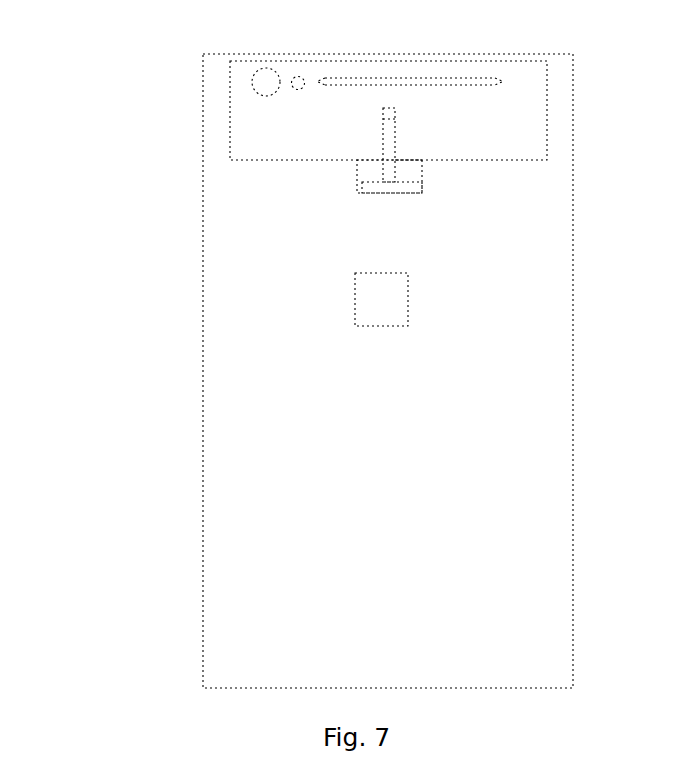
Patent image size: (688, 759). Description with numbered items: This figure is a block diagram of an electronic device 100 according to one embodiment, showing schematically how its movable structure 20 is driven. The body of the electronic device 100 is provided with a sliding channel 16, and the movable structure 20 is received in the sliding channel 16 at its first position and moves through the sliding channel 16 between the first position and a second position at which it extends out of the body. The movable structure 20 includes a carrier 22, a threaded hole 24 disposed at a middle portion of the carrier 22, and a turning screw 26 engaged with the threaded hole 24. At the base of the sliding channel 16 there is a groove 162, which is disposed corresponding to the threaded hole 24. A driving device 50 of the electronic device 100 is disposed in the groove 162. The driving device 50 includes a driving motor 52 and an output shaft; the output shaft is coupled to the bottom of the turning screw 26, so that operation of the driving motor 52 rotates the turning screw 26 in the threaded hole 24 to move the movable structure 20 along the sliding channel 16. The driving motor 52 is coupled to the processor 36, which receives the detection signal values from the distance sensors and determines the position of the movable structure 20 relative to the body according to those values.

The electronic device 100 is at (87, 197).
The sliding channel 16 is at (230, 150).
The movable structure 20 is at (507, 63).
The carrier 22 is at (525, 82).
The threaded hole 24 is at (395, 108).
The turning screw 26 is at (395, 119).
The groove 162 is at (408, 168).
The driving device 50 is at (403, 190).
The driving motor 52 is at (390, 188).
The processor 36 is at (383, 307).